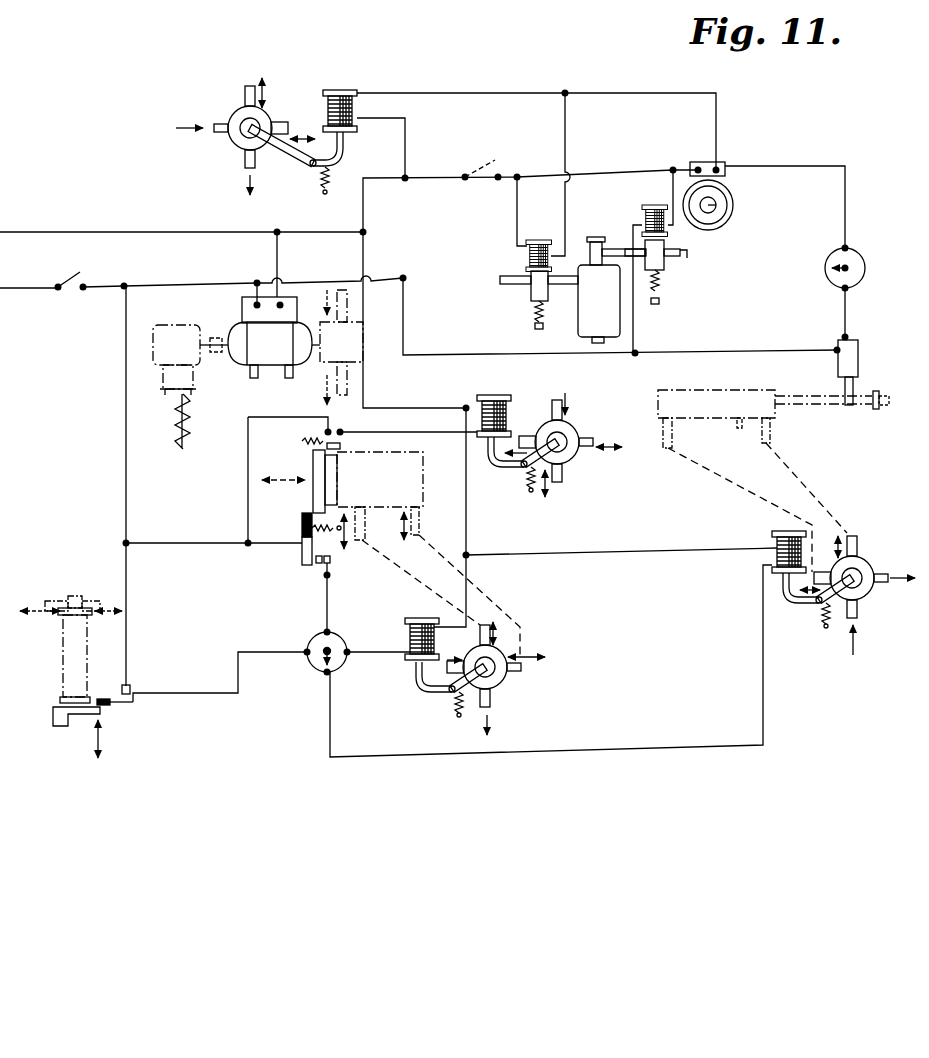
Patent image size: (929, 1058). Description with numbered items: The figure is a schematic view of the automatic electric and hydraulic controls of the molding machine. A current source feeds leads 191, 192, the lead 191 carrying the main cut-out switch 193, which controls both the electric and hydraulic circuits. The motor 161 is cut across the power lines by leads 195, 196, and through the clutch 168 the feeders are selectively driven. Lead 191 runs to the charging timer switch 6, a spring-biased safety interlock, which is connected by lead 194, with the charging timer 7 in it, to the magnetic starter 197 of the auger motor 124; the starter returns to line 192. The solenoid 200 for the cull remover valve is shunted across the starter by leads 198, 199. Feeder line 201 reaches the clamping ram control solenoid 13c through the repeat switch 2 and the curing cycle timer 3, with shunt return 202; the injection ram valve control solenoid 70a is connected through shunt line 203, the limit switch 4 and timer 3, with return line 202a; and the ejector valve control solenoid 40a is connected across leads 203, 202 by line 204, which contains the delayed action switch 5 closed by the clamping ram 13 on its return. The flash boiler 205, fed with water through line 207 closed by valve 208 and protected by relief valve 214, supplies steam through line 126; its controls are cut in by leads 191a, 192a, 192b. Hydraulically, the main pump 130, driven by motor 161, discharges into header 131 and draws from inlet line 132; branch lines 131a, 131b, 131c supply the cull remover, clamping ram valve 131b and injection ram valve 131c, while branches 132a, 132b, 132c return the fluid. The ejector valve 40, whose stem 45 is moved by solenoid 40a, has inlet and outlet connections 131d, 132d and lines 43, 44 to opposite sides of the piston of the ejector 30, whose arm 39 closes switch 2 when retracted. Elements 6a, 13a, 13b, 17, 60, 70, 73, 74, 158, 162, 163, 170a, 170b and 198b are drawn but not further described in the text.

The repeat switch 2 is at (121, 704).
The curing cycle timer 3 is at (338, 641).
The limit switch 4 is at (305, 566).
The delayed action switch 5 is at (338, 430).
The charging timer switch 6 is at (858, 357).
The pressure switch plunger 6a is at (859, 393).
The charging timer 7 is at (855, 255).
The clamping ram 13 is at (423, 483).
The clamping ram port 13a is at (421, 519).
The clamping ram port 13b is at (480, 639).
The clamping ram control solenoid 13c is at (424, 618).
The clamping ram piston 17 is at (313, 494).
The mold piece ejector 30 is at (63, 656).
The switch-actuating arm 39 is at (53, 716).
The ejector valve 40 is at (614, 432).
The ejector valve control solenoid 40a is at (494, 394).
The line 43 is at (46, 600).
The line 44 is at (92, 600).
The valve rod or stem 45 is at (528, 258).
The injection ram rod 60 is at (820, 394).
The injection ram cylinder 70 is at (738, 428).
The injection ram valve control solenoid 70a is at (780, 533).
The injection ram port 73 is at (668, 448).
The injection ram port 74 is at (770, 443).
The auger motor 124 is at (718, 205).
The steam discharge line 126 is at (503, 285).
The main hydraulic pump 130 is at (349, 345).
The discharge line or header 131 is at (350, 380).
The branch line 131a is at (226, 119).
The branch line 131b is at (437, 684).
The branch line 131c is at (859, 615).
The main inlet connection 131d is at (550, 407).
The inlet line 132 is at (350, 300).
The branch line 132a is at (257, 170).
The branch line 132b is at (478, 699).
The branch line 132c is at (878, 572).
The main outlet connection 132d is at (527, 438).
The auger 158 is at (190, 428).
The motor 161 is at (275, 366).
The pump 162 is at (176, 345).
The pump housing 163 is at (162, 383).
The clutch 168 is at (216, 337).
The cull remover valve port 170a is at (288, 119).
The cull remover valve port 170b is at (252, 80).
The lead 191 is at (403, 278).
The lead 191a is at (637, 352).
The lead 192 is at (365, 196).
The lead 192a is at (668, 186).
The lead 192b is at (518, 213).
The main cut-out switch 193 is at (58, 290).
The lead 194 is at (815, 166).
The lead 195 is at (254, 292).
The lead 196 is at (279, 259).
The starter 197 is at (726, 180).
The lead 198 is at (449, 96).
The conductor 198b is at (568, 144).
The lead 199 is at (404, 148).
The solenoid 200 is at (345, 90).
The feeder line 201 is at (382, 652).
The shunt return 202 is at (370, 399).
The return line 202a is at (644, 552).
The shunt line 203 is at (204, 543).
The line 204 is at (456, 435).
The flash boiler 205 is at (589, 299).
The water supply line 207 is at (625, 249).
The spring-biased valve 208 is at (329, 601).
The pressure relief valve 214 is at (549, 296).